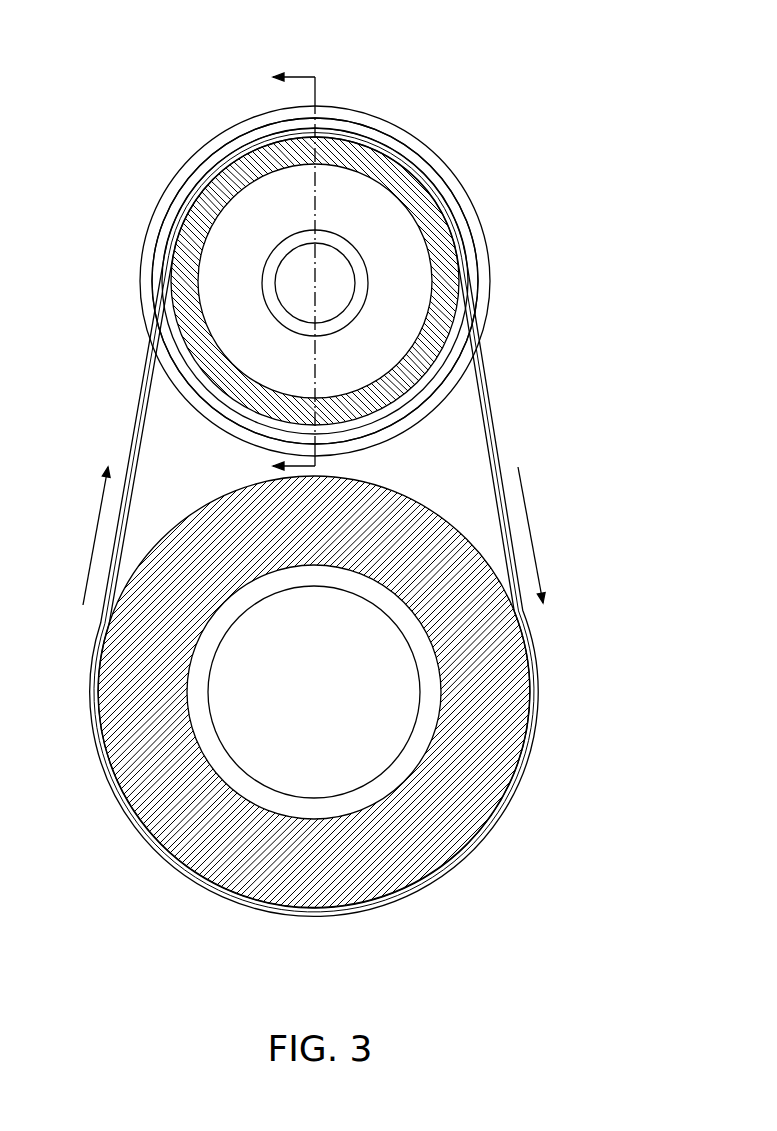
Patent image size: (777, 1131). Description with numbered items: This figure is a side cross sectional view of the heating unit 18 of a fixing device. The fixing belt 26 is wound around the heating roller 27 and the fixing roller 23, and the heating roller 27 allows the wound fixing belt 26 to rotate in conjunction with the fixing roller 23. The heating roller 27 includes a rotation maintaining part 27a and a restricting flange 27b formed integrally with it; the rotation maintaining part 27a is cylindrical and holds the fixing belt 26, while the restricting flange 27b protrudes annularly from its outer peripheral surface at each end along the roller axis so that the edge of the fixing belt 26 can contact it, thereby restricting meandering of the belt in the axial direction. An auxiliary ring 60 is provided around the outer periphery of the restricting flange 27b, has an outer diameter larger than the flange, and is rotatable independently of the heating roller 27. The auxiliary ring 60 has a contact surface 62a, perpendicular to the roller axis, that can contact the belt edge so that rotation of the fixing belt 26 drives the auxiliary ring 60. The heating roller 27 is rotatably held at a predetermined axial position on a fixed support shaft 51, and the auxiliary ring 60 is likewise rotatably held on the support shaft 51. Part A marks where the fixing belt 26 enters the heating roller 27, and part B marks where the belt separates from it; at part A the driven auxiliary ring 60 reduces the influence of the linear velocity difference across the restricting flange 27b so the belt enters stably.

The heating unit 18 is at (312, 475).
The fixing roller 23 is at (162, 808).
The fixing belt 26 is at (137, 415).
The heating roller 27 is at (173, 250).
The rotation maintaining part 27a is at (470, 343).
The restricting flange 27b is at (417, 167).
The support shaft 51 is at (303, 266).
The auxiliary ring 60 is at (350, 108).
The contact surface 62a is at (387, 128).
The part A is at (150, 318).
The part B is at (482, 298).